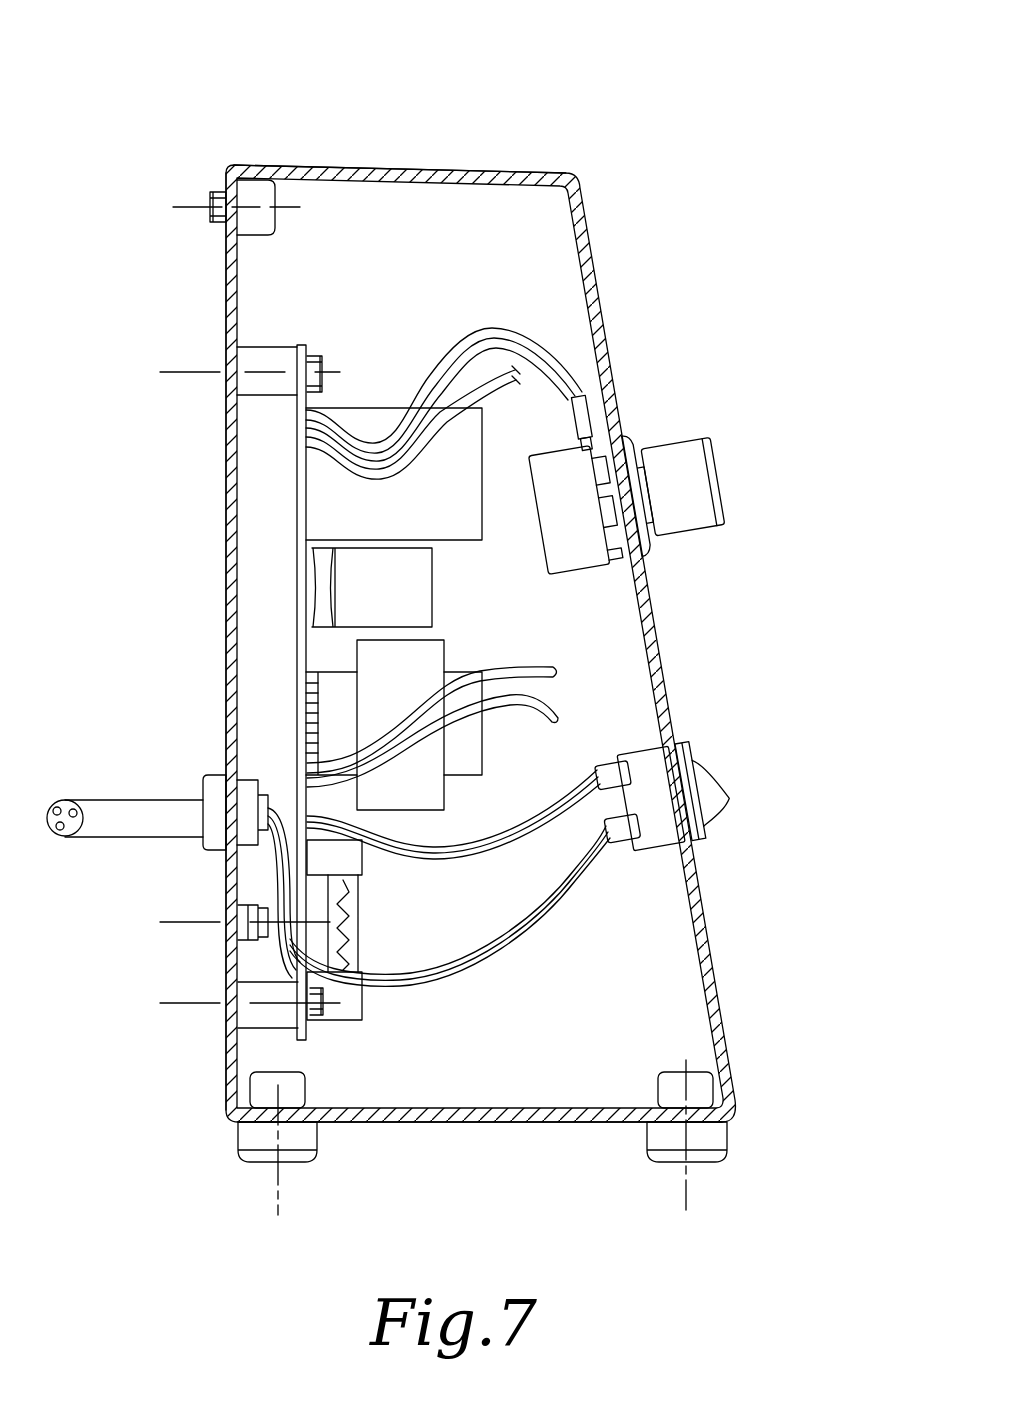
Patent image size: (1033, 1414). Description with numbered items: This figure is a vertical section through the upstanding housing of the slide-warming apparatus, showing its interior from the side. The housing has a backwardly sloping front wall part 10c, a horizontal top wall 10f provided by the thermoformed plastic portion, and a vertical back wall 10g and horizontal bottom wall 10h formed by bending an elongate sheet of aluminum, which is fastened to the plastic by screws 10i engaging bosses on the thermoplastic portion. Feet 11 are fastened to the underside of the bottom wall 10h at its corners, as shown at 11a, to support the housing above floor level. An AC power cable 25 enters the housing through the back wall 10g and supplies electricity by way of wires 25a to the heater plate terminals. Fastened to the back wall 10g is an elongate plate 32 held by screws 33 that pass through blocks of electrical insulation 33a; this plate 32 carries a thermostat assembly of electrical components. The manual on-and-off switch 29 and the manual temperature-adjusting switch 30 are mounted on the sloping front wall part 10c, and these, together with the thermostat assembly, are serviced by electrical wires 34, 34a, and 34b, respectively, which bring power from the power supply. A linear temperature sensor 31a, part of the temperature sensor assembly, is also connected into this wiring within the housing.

The backwardly sloping front wall part 10c is at (593, 279).
The horizontal top wall 10f is at (408, 170).
The vertical back wall 10g is at (226, 672).
The horizontal bottom wall 10h is at (418, 1122).
The fastening (screws) 10i is at (212, 198).
The feet 11 is at (265, 1165).
The foot fastening 11a is at (686, 1088).
The AC power cable 25 is at (140, 810).
The wires 25a is at (300, 870).
The manual on-and-off switch 29 is at (722, 803).
The manual temperature-adjusting switch 30 is at (733, 493).
The linear temperature sensor 31a is at (512, 385).
The elongate plate 32 is at (297, 545).
The screws 33 is at (322, 375).
The blocks of electrical insulation 33a is at (270, 372).
The electrical wires 34 is at (478, 322).
The electrical wires 34a is at (553, 665).
The electrical wires 34b is at (565, 700).